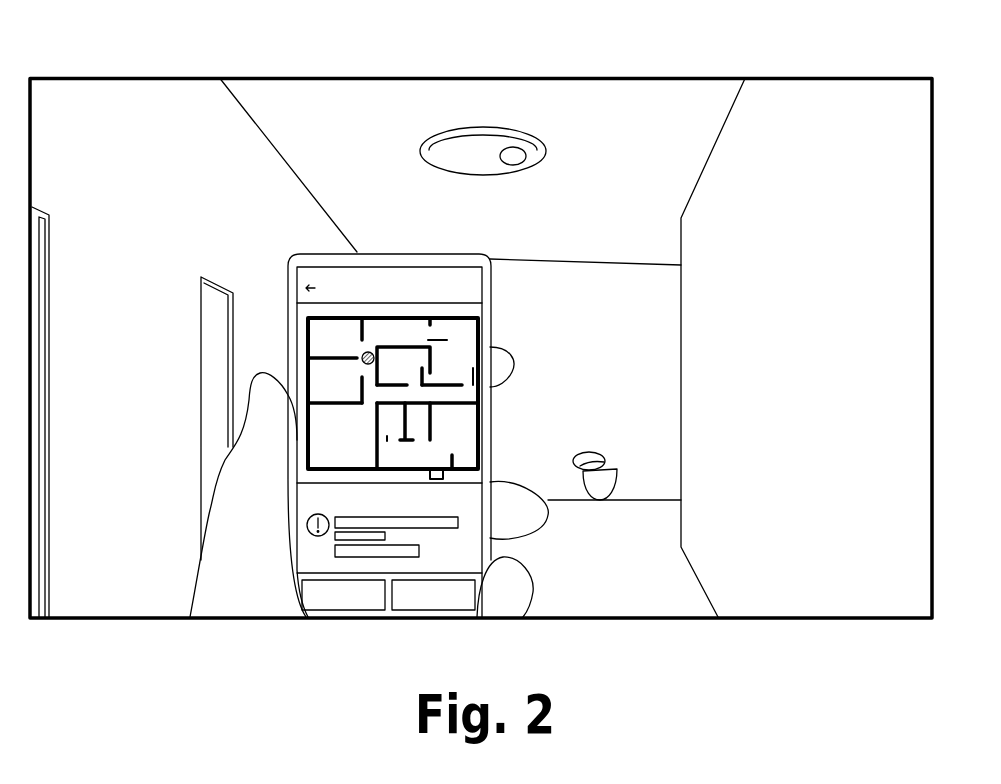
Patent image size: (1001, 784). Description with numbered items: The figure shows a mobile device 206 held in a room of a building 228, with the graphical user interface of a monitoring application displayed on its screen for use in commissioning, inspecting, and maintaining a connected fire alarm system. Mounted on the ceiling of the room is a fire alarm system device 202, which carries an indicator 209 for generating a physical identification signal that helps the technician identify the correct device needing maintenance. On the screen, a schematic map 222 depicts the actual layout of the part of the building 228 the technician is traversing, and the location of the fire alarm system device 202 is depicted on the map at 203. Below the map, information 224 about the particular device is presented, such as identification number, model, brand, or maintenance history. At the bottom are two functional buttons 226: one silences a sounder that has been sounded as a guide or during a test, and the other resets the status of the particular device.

The fire alarm system device 202 is at (494, 103).
The indicator 209 is at (538, 154).
The location of fire alarm system device on map 203 is at (370, 355).
The mobile device 206 is at (422, 366).
The schematic map 222 is at (306, 255).
The information 224 is at (280, 527).
The functional buttons 226 is at (297, 602).
The building 228 is at (867, 458).